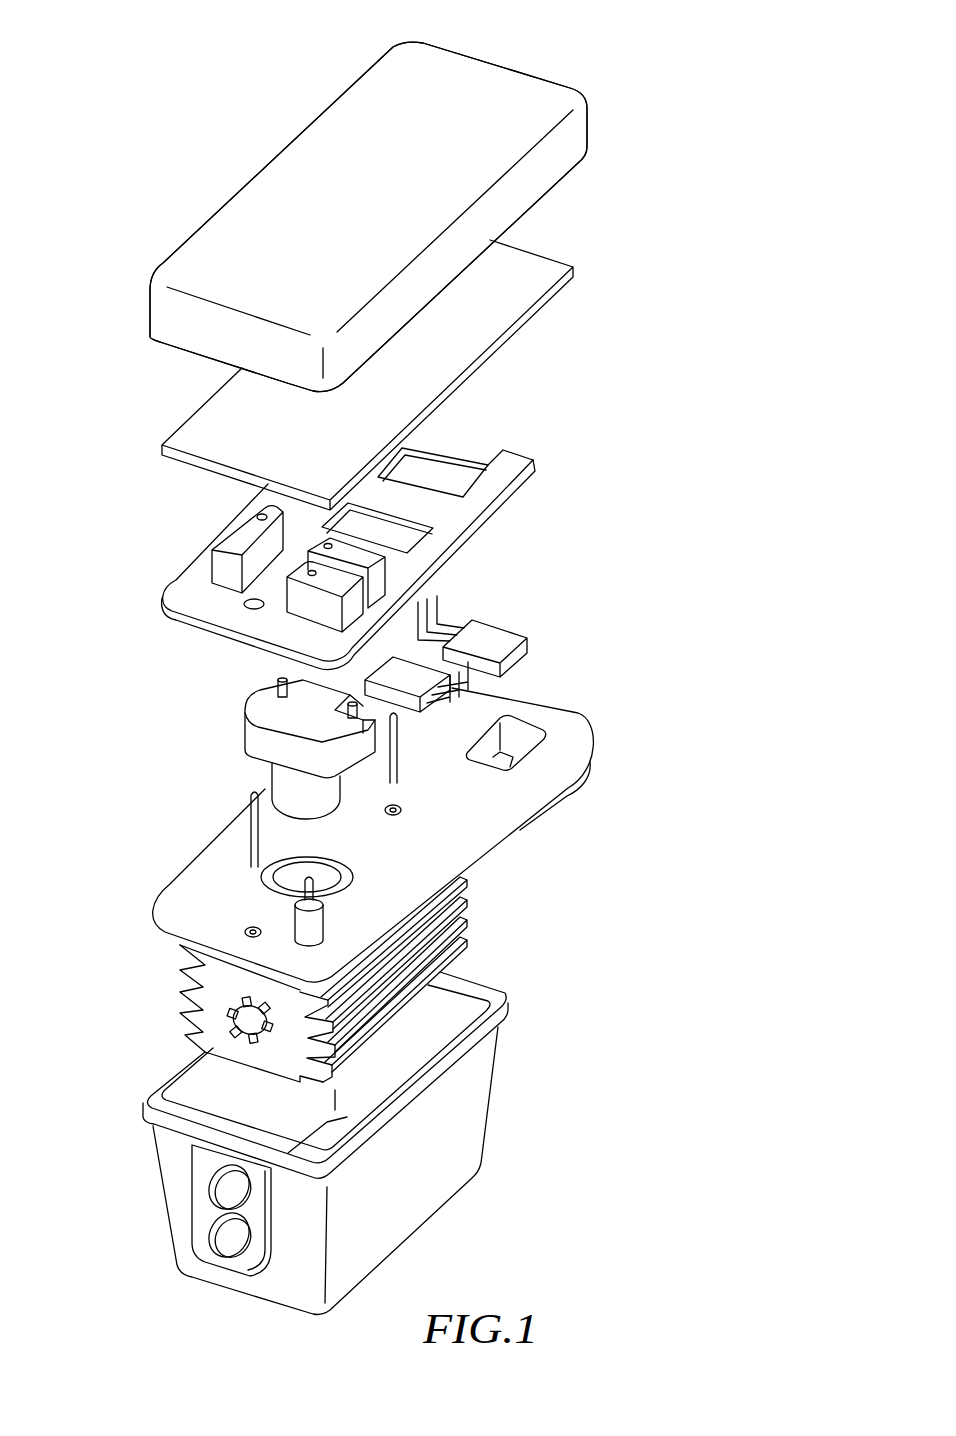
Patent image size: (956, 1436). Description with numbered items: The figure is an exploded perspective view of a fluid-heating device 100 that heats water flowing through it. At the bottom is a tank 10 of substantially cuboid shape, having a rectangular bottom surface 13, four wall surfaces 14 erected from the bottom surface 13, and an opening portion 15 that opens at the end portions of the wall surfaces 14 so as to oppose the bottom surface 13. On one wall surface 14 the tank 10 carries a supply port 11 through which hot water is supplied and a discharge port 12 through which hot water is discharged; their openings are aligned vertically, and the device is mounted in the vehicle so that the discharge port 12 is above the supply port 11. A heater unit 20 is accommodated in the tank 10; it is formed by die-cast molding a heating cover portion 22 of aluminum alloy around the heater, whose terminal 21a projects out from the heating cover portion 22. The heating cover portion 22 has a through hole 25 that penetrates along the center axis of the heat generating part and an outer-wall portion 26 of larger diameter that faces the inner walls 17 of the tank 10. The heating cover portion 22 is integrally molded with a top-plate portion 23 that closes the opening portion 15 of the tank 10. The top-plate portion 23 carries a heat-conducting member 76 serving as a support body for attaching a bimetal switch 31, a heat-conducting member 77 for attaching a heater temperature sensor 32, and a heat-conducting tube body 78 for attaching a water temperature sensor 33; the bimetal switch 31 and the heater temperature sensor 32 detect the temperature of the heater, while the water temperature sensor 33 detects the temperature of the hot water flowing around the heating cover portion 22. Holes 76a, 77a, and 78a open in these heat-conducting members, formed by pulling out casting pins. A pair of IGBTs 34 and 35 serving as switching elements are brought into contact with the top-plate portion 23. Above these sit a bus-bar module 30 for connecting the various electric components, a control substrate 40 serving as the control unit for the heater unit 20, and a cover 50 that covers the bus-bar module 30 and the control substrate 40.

The fluid-heating device 100 is at (619, 90).
The cover 50 is at (168, 270).
The control substrate 40 is at (206, 410).
The bus-bar module 30 is at (185, 576).
The IGBT 34 is at (507, 647).
The IGBT 35 is at (428, 679).
The bimetal switch 31 is at (267, 717).
The heater temperature sensor 32 is at (398, 755).
The water temperature sensor 33 is at (250, 822).
The heat-conducting member (support body) 76 is at (195, 888).
The hole 76a is at (262, 888).
The top-plate portion 23 is at (165, 888).
The heat-conducting member (tube body) 78 is at (245, 935).
The hole 78a is at (247, 930).
The heat-conducting member (support body) 77 is at (401, 813).
The hole 77a is at (405, 811).
The terminal 21a is at (324, 904).
The heater unit 20 is at (180, 970).
The heating cover portion 22 is at (207, 1022).
The through hole 25 is at (280, 1035).
The outer-wall portion 26 is at (343, 1013).
The inner walls 17 is at (183, 1100).
The opening portion 15 is at (467, 990).
The tank 10 is at (155, 1150).
The wall surfaces 14 is at (383, 1217).
The bottom surface 13 is at (343, 1133).
The discharge port 12 is at (212, 1194).
The supply port 11 is at (212, 1242).